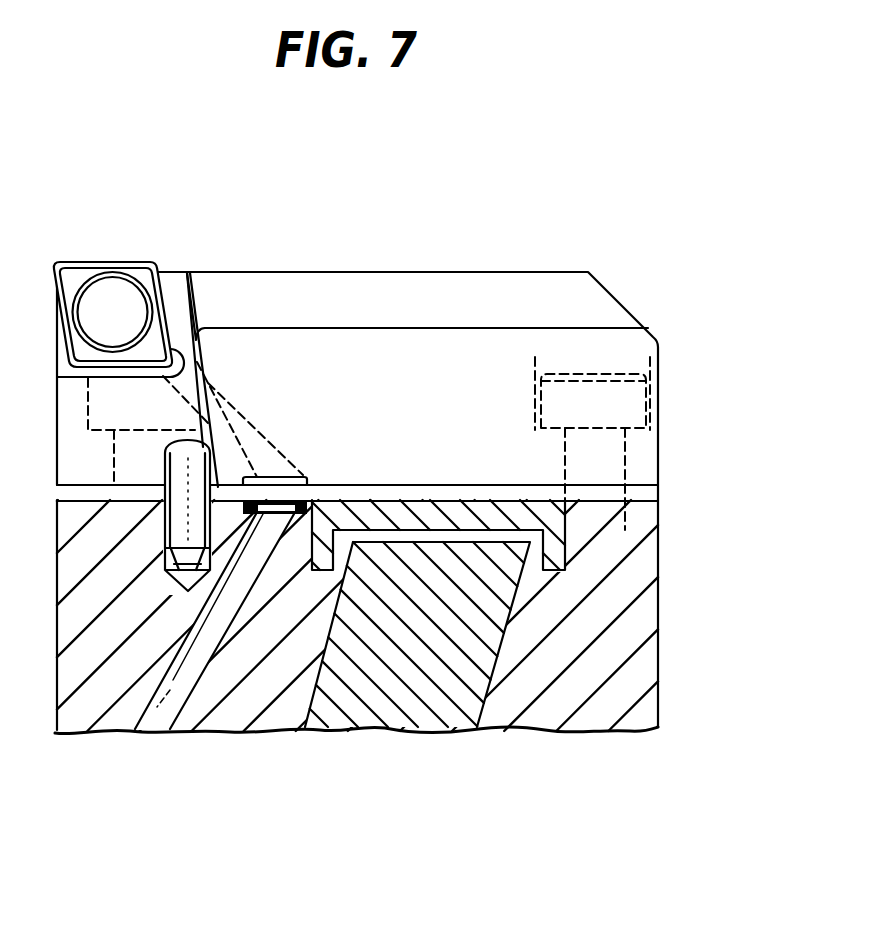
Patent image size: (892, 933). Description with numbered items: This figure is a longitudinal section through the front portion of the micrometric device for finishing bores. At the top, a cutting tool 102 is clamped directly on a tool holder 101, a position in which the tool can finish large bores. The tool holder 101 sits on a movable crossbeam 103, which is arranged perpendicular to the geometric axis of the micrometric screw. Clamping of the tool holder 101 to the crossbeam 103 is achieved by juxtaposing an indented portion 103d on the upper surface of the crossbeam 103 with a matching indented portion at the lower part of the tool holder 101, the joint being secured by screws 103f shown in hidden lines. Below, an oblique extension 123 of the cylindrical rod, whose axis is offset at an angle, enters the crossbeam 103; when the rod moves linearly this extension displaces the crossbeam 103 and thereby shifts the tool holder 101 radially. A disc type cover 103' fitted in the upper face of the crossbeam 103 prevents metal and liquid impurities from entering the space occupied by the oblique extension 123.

The tool holder 101 is at (528, 293).
The cutting tool 102 is at (133, 268).
The movable crossbeam 103 is at (356, 617).
The disc type cover 103' is at (516, 535).
The indented portion 103d is at (645, 491).
The screws 103f is at (632, 402).
The oblique extension 123 is at (383, 712).